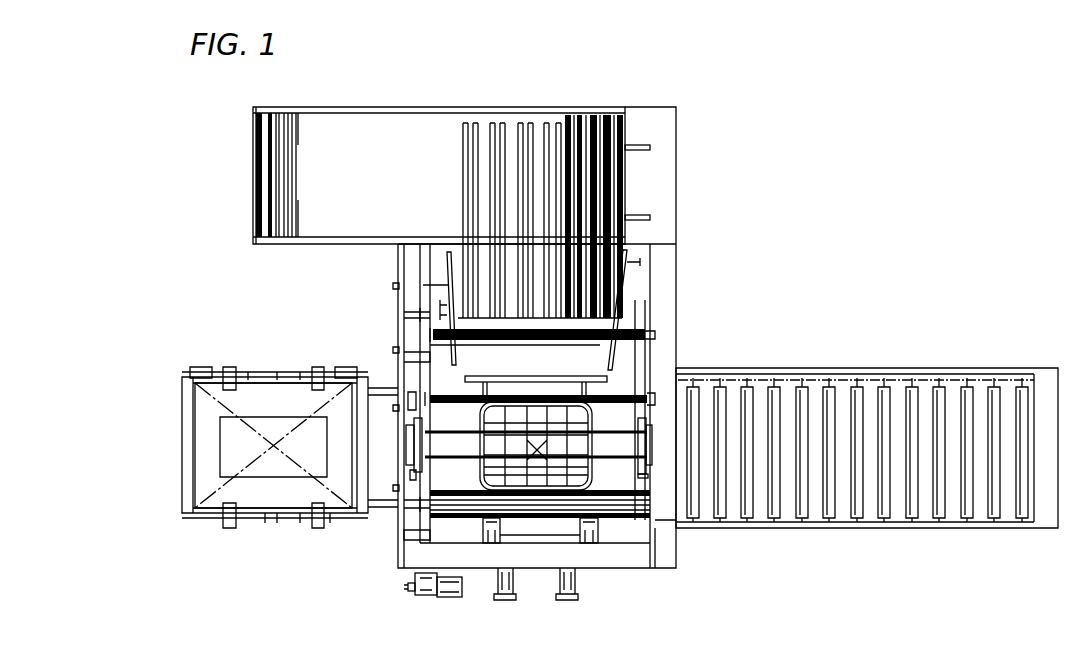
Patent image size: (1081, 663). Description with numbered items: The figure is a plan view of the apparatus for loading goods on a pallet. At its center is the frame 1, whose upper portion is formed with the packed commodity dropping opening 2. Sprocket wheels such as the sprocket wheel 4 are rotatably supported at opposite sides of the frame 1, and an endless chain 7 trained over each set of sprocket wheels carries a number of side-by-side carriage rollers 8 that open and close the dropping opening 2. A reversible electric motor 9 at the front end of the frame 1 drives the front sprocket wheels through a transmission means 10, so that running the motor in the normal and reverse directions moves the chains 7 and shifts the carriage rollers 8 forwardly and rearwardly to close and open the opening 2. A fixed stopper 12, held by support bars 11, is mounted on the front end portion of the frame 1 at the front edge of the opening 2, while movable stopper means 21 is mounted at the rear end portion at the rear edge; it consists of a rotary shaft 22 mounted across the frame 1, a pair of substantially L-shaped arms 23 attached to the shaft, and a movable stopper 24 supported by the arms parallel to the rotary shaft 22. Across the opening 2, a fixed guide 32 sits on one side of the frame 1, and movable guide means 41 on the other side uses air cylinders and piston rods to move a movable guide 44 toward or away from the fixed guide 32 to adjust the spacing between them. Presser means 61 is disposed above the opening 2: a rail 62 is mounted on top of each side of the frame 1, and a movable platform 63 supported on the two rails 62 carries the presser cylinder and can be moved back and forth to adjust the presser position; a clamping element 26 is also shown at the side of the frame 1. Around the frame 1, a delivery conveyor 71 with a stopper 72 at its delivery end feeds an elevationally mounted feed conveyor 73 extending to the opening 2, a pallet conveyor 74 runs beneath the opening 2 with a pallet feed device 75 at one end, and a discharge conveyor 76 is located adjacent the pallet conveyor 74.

The frame 1 is at (670, 550).
The packed commodity dropping opening 2 is at (650, 540).
The sprocket wheel 4 is at (420, 315).
The endless chain 7 is at (417, 358).
The carriage rollers 8 is at (605, 515).
The reversible electric motor 9 is at (445, 596).
The transmission means 10 is at (407, 587).
The support bars 11 is at (491, 520).
The fixed stopper 12 is at (550, 520).
The movable stopper means 21 is at (590, 372).
The rotary shaft 22 is at (623, 398).
The L-shaped arms 23 is at (575, 384).
The movable stopper 24 is at (513, 377).
The clamping device 26 is at (400, 433).
The fixed guide 32 is at (627, 267).
The movable guide means 41 is at (420, 505).
The movable guide 44 is at (420, 537).
The presser means 61 is at (593, 423).
The rail 62 is at (637, 512).
The movable platform 63 is at (642, 476).
The delivery conveyor 71 is at (262, 142).
The stopper 72 is at (625, 165).
The feed conveyor 73 is at (612, 253).
The pallet conveyor 74 is at (383, 385).
The pallet feed device 75 is at (185, 440).
The discharge conveyor 76 is at (978, 372).